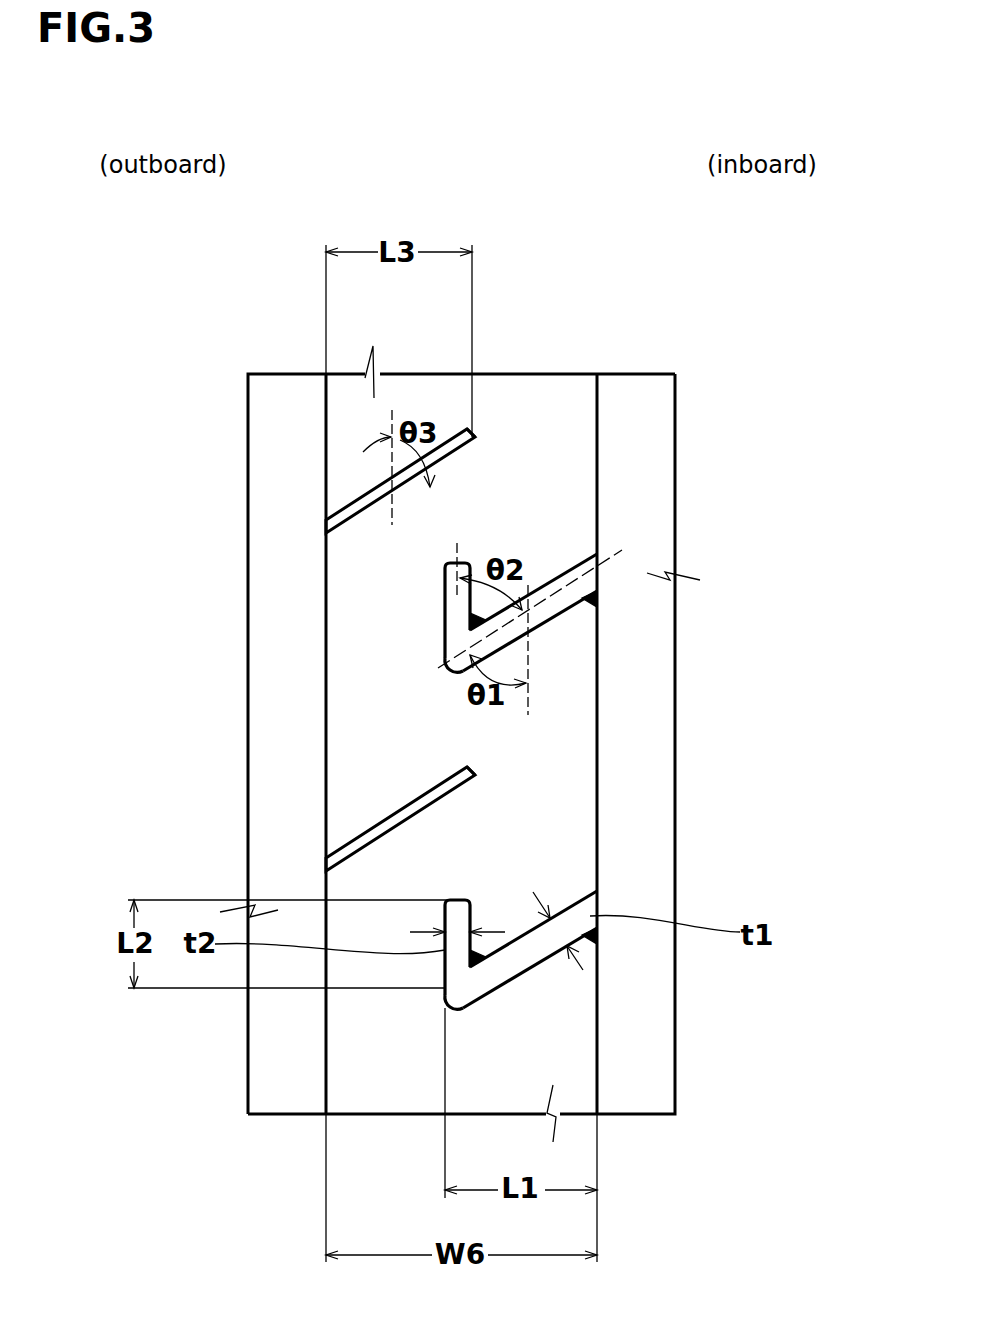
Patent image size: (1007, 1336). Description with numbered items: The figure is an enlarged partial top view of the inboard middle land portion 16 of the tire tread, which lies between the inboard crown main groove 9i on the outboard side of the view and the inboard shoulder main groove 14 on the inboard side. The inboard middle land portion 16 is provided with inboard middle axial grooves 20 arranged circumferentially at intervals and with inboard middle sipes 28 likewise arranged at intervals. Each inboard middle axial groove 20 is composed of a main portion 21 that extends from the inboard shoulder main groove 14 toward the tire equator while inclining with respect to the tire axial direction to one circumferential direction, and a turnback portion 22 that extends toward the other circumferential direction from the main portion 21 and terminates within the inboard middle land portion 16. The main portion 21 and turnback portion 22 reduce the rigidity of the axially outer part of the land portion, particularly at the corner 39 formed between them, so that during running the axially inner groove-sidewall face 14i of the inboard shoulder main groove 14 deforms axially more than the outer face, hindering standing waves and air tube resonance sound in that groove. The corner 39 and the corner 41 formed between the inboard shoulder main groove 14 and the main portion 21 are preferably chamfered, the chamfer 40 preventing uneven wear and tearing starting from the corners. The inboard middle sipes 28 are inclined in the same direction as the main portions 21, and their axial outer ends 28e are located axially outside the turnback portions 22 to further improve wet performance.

The inboard crown main groove 9i is at (290, 425).
The inboard shoulder main groove 14 is at (632, 415).
The axially inner groove-sidewall face 14i is at (600, 722).
The inboard middle land portion 16 is at (535, 415).
The inboard middle axial grooves 20 is at (645, 793).
The main portion 21 is at (498, 650).
The turnback portion 22 is at (465, 563).
The inboard middle sipes 28 is at (372, 505).
The axial outer ends 28e is at (475, 436).
The corner 39 is at (485, 972).
The chamfer 40 is at (654, 1002).
The corner 41 is at (592, 935).